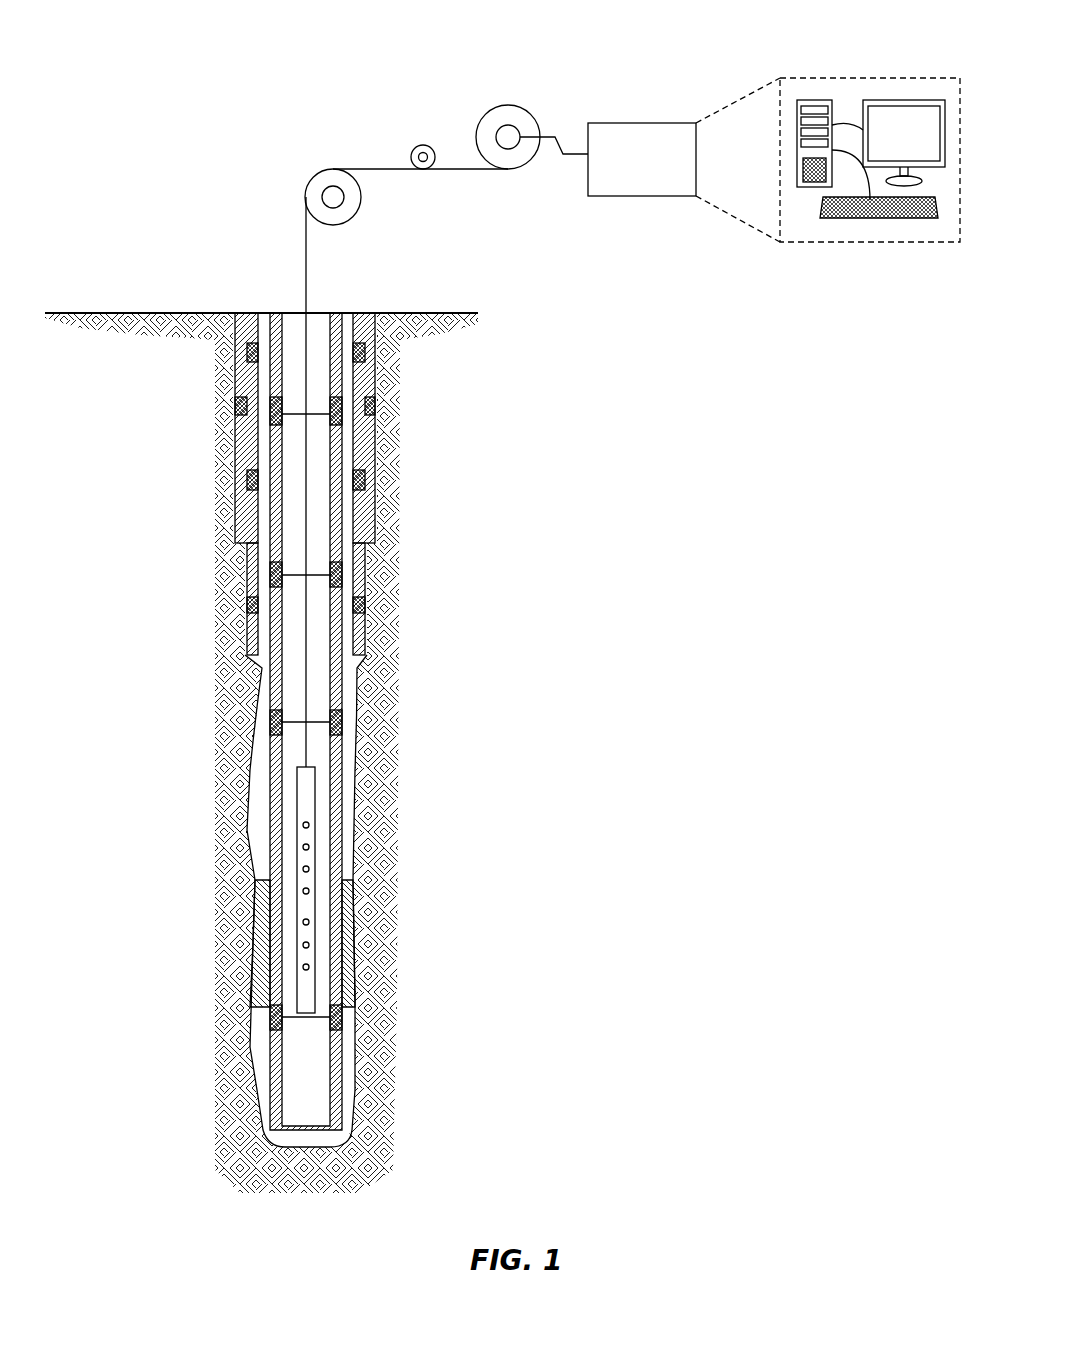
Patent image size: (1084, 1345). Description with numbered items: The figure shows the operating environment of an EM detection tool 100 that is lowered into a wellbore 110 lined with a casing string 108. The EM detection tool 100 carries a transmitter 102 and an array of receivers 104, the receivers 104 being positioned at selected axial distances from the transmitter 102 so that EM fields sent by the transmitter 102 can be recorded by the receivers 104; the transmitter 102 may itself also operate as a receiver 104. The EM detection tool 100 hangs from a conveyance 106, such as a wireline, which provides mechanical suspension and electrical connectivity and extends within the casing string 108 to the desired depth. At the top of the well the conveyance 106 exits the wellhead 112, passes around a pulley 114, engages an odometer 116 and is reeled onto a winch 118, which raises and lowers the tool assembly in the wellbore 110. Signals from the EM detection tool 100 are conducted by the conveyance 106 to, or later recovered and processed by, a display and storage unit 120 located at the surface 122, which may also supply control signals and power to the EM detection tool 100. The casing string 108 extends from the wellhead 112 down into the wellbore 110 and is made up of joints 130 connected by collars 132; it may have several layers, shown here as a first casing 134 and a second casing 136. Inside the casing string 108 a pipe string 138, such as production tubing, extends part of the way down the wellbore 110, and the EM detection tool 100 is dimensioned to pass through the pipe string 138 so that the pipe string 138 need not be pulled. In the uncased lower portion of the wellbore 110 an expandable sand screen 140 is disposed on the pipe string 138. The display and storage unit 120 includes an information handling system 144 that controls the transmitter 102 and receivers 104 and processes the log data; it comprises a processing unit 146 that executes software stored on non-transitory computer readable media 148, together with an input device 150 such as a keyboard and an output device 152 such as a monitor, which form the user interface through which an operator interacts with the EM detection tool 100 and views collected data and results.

The EM detection tool 100 is at (305, 1003).
The transmitter 102 is at (310, 825).
The receiver 104 is at (310, 847).
The conveyance 106 is at (306, 272).
The casing string 108 is at (222, 534).
The wellbore 110 is at (360, 660).
The wellhead 112 is at (293, 304).
The pulley 114 is at (305, 185).
The odometer 116 is at (425, 145).
The winch 118 is at (525, 112).
The display and storage unit 120 is at (653, 123).
The surface 122 is at (85, 313).
The joint 130 is at (248, 565).
The collar 132 is at (250, 605).
The first casing 134 is at (360, 568).
The second casing 136 is at (372, 520).
The pipe string 138 is at (340, 1087).
The expandable sand screen 140 is at (258, 930).
The information handling system 144 is at (855, 78).
The processing unit 146 is at (849, 174).
The non-transitory computer readable media 148 is at (815, 100).
The input device 150 is at (870, 218).
The output device 152 is at (905, 100).